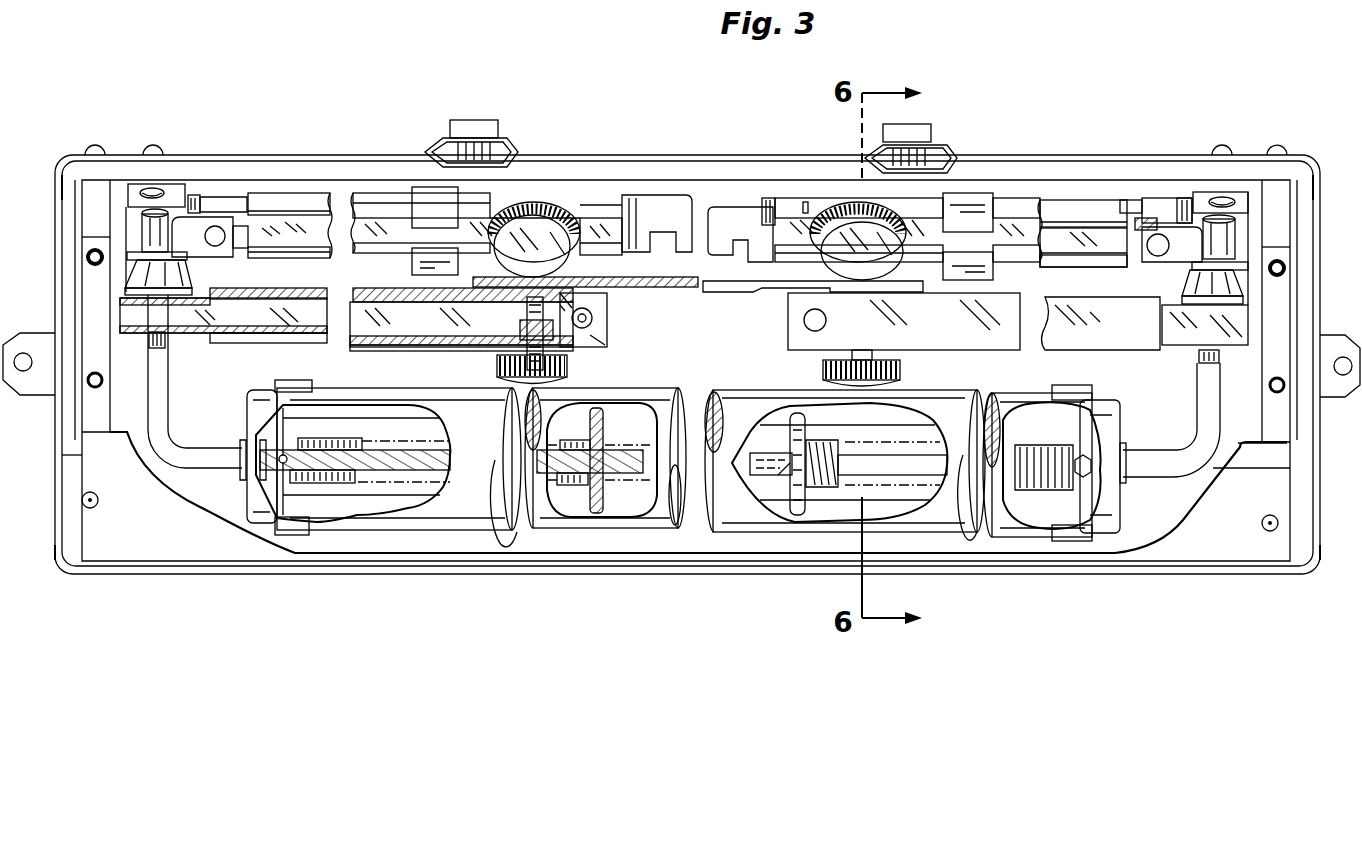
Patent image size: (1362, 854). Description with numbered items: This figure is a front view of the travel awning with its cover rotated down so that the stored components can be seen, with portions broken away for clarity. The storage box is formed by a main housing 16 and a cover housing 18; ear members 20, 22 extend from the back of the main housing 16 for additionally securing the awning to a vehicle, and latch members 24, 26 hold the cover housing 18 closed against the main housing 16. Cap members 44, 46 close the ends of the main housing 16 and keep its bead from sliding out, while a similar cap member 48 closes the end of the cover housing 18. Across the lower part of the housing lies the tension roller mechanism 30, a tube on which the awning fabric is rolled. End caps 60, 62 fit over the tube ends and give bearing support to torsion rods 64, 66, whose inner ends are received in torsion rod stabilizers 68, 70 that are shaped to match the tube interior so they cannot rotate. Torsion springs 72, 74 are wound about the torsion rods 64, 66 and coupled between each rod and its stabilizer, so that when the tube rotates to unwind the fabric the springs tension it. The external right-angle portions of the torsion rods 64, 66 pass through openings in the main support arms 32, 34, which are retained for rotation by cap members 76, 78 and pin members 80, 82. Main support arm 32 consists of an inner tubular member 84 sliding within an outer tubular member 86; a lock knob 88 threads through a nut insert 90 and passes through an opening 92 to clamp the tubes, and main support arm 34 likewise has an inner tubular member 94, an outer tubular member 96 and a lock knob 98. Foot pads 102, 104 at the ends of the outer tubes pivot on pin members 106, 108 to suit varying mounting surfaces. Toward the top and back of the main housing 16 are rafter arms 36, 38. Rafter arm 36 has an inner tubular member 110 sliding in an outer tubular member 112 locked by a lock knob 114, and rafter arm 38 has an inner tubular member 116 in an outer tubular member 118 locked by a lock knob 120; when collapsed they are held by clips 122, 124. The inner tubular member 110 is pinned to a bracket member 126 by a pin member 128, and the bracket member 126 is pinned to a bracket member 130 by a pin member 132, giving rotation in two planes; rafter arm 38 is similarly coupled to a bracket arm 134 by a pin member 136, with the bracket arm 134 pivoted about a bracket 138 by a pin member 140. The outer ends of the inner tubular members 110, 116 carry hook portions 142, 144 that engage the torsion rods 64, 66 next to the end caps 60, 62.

The main housing 16 is at (183, 165).
The cover housing 18 is at (150, 565).
The ear member 20 is at (33, 333).
The ear member 22 is at (1328, 335).
The latch member 24 is at (483, 128).
The latch member 26 is at (915, 132).
The tension roller mechanism 30 is at (347, 540).
The main support arm 32 is at (232, 343).
The main support arm 34 is at (940, 342).
The rafter arm 36 is at (483, 207).
The rafter arm 38 is at (1055, 208).
The cap member 44 is at (62, 192).
The cap member 46 is at (1313, 205).
The cap member 48 is at (62, 578).
The end cap 60 is at (258, 522).
The end cap 62 is at (1112, 535).
The torsion rod 64 is at (173, 490).
The torsion rod 66 is at (1182, 495).
The torsion rod stabilizer 68 is at (595, 513).
The torsion rod stabilizer 70 is at (795, 520).
The torsion spring 72 is at (562, 493).
The torsion spring 74 is at (832, 490).
The cap member 76 is at (183, 272).
The cap member 78 is at (1195, 282).
The pin member 80 is at (168, 372).
The pin member 82 is at (1199, 358).
The inner tubular member 84 is at (302, 302).
The outer tubular member 86 is at (380, 290).
The lock knob 88 is at (567, 368).
The nut insert 90 is at (533, 322).
The opening 92 is at (520, 312).
The inner tubular member 94 is at (1162, 325).
The outer tubular member 96 is at (1116, 331).
The lock knob 98 is at (824, 368).
The foot pad 102 is at (603, 300).
The foot pad 104 is at (726, 292).
The pin member 106 is at (607, 327).
The pin member 108 is at (804, 322).
The inner tubular member 110 is at (272, 228).
The outer tubular member 112 is at (373, 238).
The lock knob 114 is at (538, 228).
The inner tubular member 116 is at (1067, 240).
The outer tubular member 118 is at (1077, 222).
The lock knob 120 is at (846, 235).
The clip 122 is at (444, 221).
The clip 124 is at (965, 212).
The bracket member 126 is at (196, 200).
The pin member 128 is at (216, 228).
The bracket member 130 is at (137, 190).
The pin member 132 is at (157, 186).
The bracket arm 134 is at (1184, 212).
The pin member 136 is at (1160, 240).
The bracket 138 is at (1240, 208).
The pin member 140 is at (1225, 198).
The hook portion 142 is at (658, 208).
The hook portion 144 is at (733, 210).